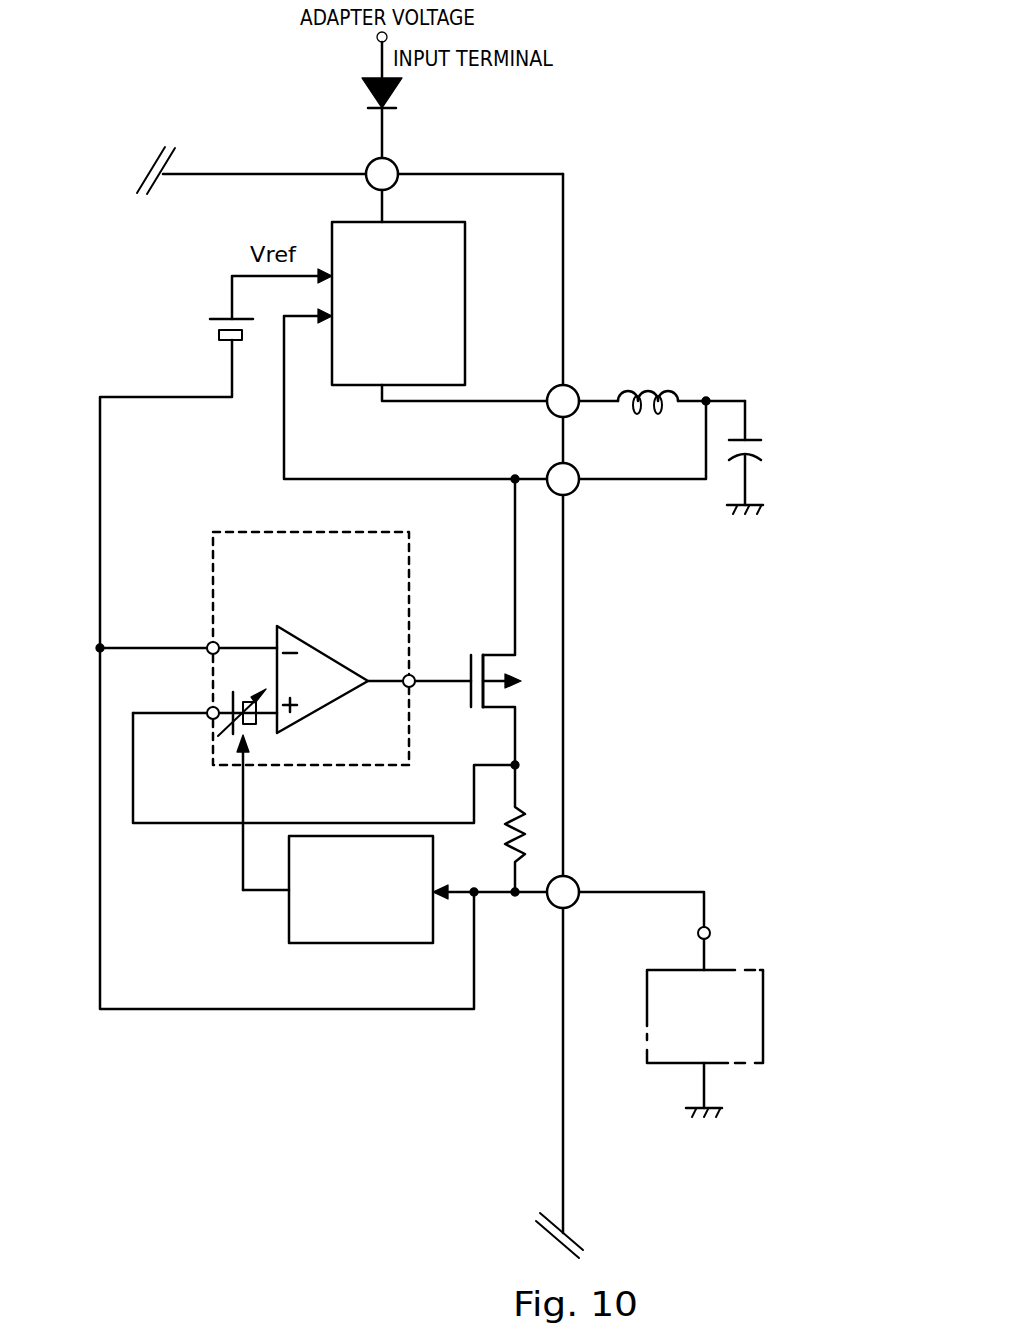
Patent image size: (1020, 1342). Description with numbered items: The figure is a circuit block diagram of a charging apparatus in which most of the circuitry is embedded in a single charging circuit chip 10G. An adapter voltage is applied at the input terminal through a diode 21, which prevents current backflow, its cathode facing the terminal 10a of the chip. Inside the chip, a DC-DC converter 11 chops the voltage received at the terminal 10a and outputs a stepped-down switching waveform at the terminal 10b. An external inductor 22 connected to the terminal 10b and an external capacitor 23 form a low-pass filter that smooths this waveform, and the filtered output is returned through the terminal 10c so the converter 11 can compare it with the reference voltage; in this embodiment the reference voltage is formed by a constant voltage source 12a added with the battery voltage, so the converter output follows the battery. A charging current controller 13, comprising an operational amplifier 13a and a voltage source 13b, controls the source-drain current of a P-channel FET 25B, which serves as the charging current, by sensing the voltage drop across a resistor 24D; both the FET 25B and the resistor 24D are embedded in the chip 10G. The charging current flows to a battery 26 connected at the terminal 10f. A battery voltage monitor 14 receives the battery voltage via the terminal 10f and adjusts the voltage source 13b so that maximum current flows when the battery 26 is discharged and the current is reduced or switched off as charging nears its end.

The diode 21 is at (395, 97).
The external connection terminal 10a is at (398, 168).
The charging circuit chip 10G is at (563, 200).
The DC-DC converter 11 is at (465, 257).
The constant voltage source 12a is at (215, 331).
The external connection terminal 10b is at (575, 385).
The inductor 22 is at (675, 385).
The external connection terminal 10c is at (580, 472).
The capacitor 23 is at (763, 448).
The charging current controller 13 is at (410, 605).
The operational amplifier 13a is at (310, 716).
The voltage source 13b is at (235, 736).
The P-channel FET 25B is at (500, 714).
The resistor 24D is at (533, 829).
The external connection terminal 10f is at (580, 878).
The battery voltage monitor 14 is at (400, 945).
The battery 26 is at (765, 991).